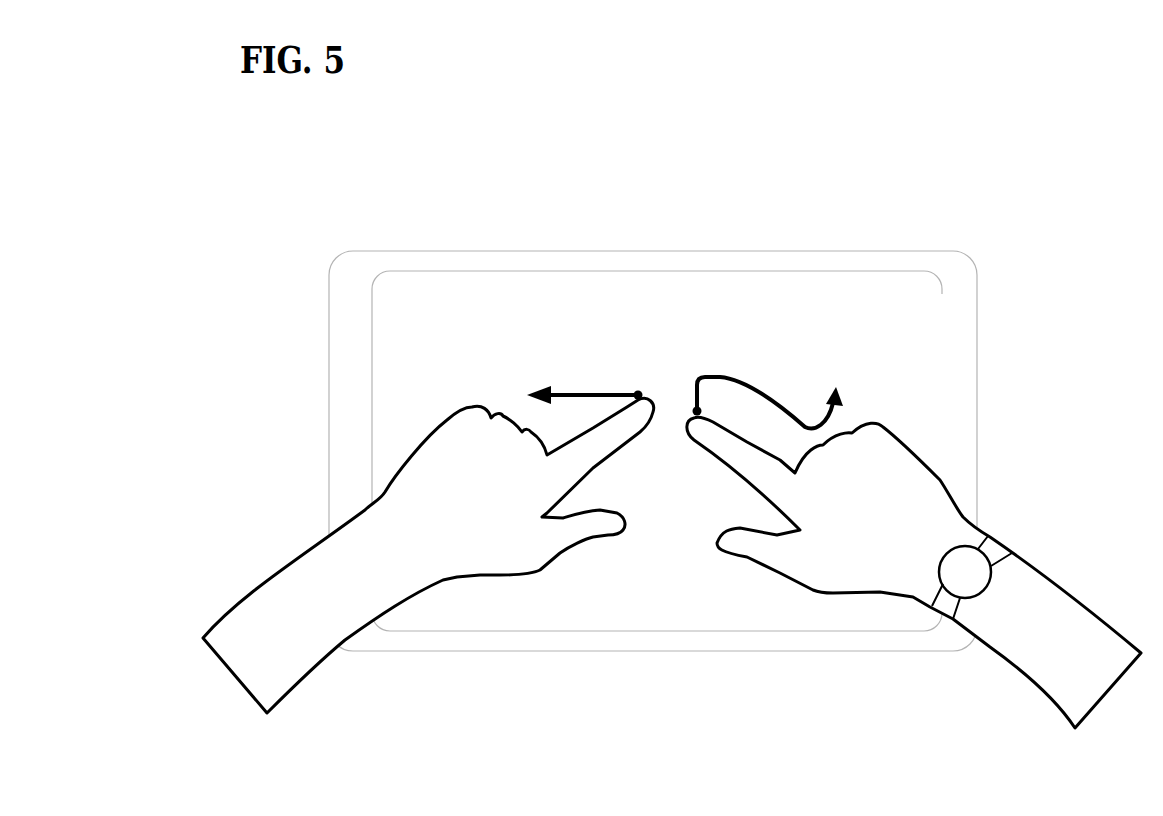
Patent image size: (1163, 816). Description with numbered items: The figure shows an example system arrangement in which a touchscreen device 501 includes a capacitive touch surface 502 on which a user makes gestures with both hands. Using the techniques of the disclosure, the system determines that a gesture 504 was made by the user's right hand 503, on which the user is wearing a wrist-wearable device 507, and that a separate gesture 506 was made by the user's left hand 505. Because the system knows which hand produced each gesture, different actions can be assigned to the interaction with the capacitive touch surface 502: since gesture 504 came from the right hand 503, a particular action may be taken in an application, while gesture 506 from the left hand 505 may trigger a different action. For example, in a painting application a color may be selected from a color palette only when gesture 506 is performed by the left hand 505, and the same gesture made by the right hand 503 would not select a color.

The touchscreen device 501 is at (328, 382).
The capacitive touch surface 502 is at (395, 440).
The right hand 503 is at (1032, 603).
The gesture 504 is at (748, 388).
The left hand 505 is at (277, 648).
The gesture 506 is at (605, 395).
The wrist-wearable device 507 is at (977, 567).